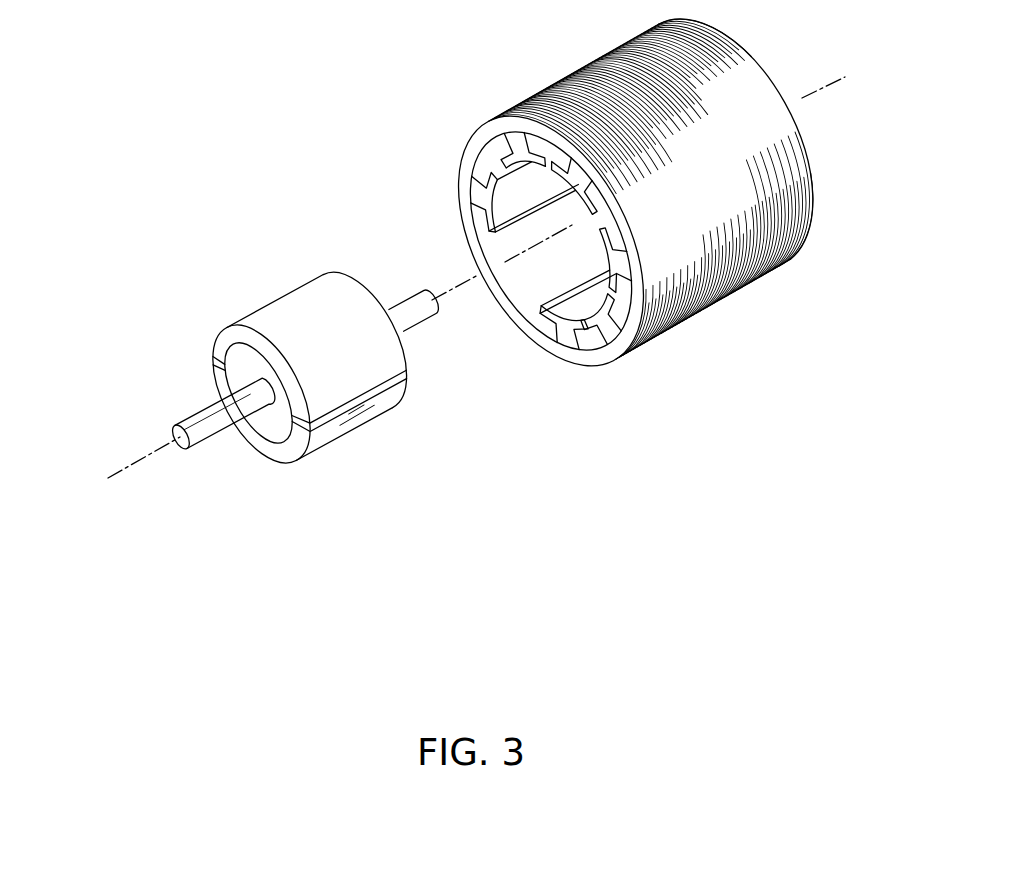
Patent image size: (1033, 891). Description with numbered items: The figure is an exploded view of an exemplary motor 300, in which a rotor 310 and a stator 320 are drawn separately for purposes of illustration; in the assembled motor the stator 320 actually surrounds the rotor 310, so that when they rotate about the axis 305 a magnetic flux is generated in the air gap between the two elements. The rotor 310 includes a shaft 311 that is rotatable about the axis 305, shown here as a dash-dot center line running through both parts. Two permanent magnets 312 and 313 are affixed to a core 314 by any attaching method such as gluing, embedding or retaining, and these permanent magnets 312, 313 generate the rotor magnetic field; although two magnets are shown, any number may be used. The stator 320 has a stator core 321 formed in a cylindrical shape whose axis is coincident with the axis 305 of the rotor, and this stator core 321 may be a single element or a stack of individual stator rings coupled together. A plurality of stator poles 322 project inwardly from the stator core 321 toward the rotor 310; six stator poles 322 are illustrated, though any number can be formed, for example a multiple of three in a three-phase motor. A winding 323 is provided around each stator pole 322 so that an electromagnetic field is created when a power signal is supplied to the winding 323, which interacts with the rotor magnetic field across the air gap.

The motor 300 is at (307, 117).
The axis 305 is at (138, 460).
The rotor 310 is at (300, 248).
The shaft 311 is at (200, 418).
The permanent magnet 312 is at (327, 286).
The permanent magnet 313 is at (377, 403).
The core 314 is at (277, 432).
The stator 320 is at (755, 298).
The stator core 321 is at (803, 128).
The stator pole 322 is at (573, 308).
The winding 323 is at (580, 325).